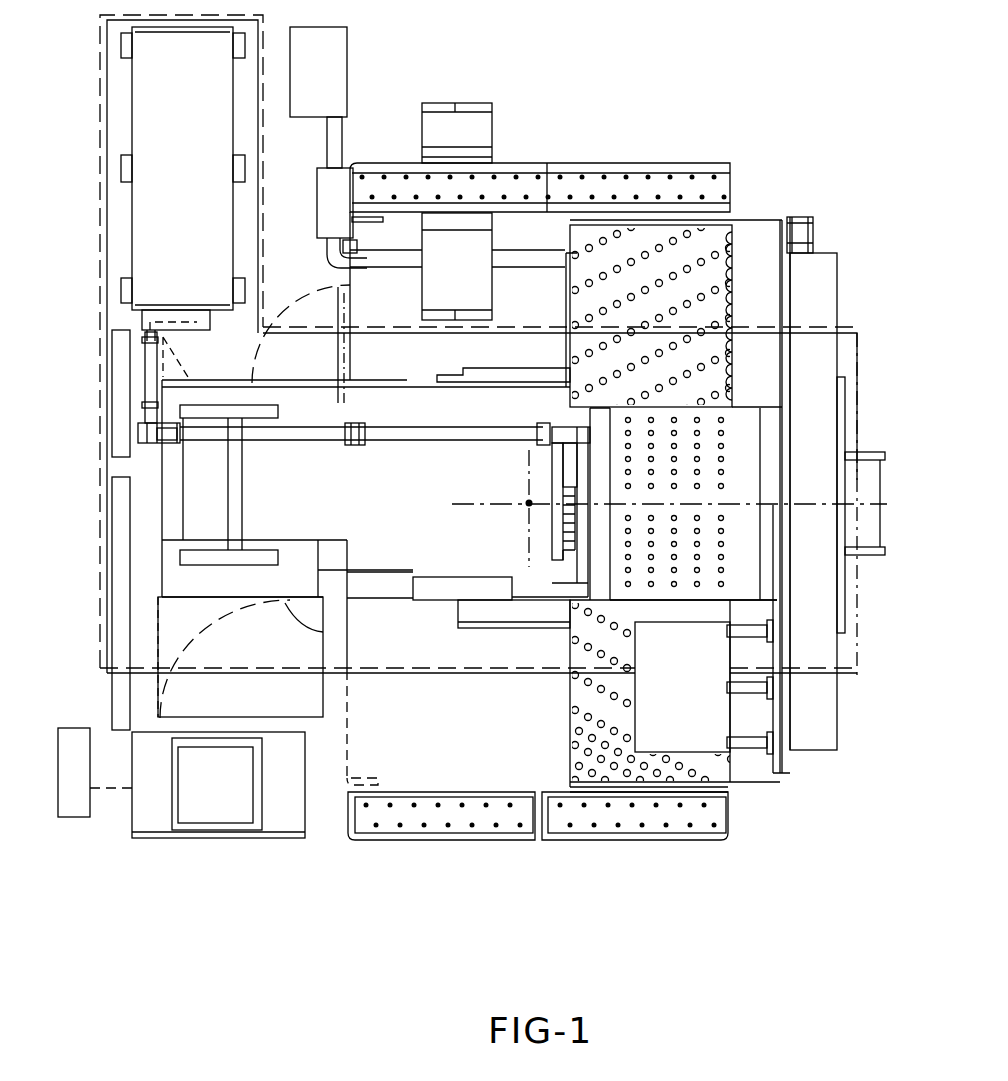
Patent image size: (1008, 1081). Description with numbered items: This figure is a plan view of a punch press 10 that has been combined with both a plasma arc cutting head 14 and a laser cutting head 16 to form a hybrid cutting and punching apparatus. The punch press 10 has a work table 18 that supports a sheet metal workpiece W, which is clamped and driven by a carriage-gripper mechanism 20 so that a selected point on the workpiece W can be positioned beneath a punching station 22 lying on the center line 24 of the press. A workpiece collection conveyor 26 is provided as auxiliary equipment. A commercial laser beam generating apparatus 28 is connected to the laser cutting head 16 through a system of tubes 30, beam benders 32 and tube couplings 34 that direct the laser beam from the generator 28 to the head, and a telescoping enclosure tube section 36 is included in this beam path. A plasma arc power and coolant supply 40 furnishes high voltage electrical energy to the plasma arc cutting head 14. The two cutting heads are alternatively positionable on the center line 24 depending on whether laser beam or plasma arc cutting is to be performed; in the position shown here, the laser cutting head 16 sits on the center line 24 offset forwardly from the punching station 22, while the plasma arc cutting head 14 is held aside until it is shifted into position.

The punch press 10 is at (786, 108).
The plasma arc cutting head 14 is at (570, 528).
The laser cutting head 16 is at (578, 496).
The work table 18 is at (718, 238).
The carriage-gripper mechanism 20 is at (814, 752).
The punching station 22 is at (527, 503).
The center line 24 is at (822, 508).
The workpiece collection conveyor 26 is at (873, 555).
The laser beam generating apparatus 28 is at (130, 75).
The tubes 30 is at (140, 352).
The beam benders 32 is at (138, 430).
The tube couplings 34 is at (360, 447).
The telescoping enclosure tube section 36 is at (578, 472).
The plasma arc power and coolant supply 40 is at (85, 820).
The workpiece W is at (690, 737).